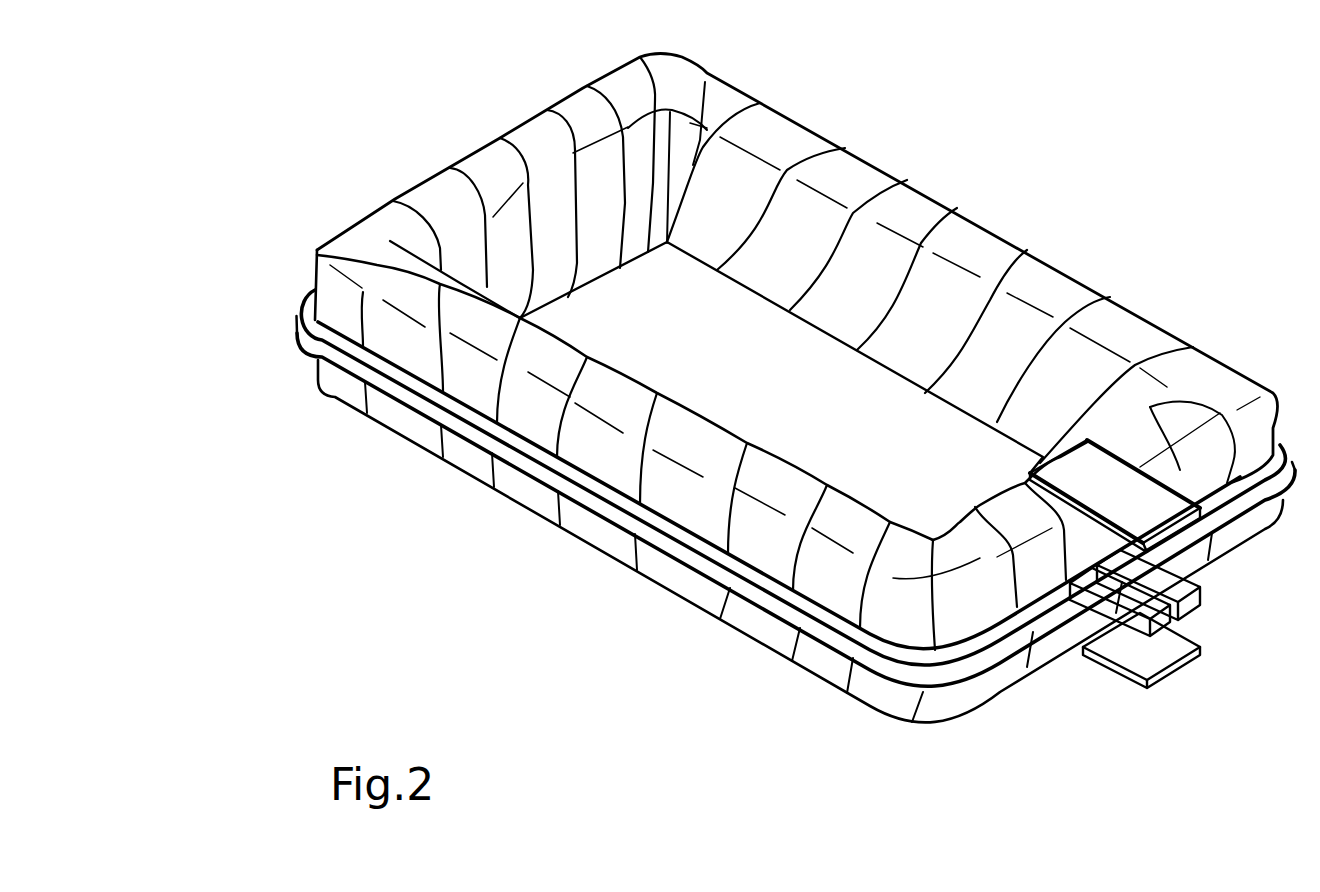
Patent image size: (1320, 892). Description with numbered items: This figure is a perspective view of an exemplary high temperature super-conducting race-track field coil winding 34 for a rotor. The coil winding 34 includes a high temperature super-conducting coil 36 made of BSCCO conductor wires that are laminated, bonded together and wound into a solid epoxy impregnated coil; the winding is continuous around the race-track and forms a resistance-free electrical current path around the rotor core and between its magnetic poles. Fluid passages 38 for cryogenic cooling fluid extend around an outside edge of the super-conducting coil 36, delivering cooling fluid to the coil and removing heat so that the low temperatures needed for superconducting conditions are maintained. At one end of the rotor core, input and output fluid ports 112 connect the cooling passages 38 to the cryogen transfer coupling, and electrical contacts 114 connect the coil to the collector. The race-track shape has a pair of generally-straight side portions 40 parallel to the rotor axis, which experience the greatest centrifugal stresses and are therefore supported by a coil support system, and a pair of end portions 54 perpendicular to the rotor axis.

The race-track field coil winding 34 is at (470, 85).
The super-conducting coil 36 is at (1037, 288).
The fluid passages 38 is at (633, 528).
The side portions 40 is at (488, 511).
The end portions 54 is at (390, 203).
The fluid ports 112 is at (1173, 617).
The electrical contacts 114 is at (1155, 500).